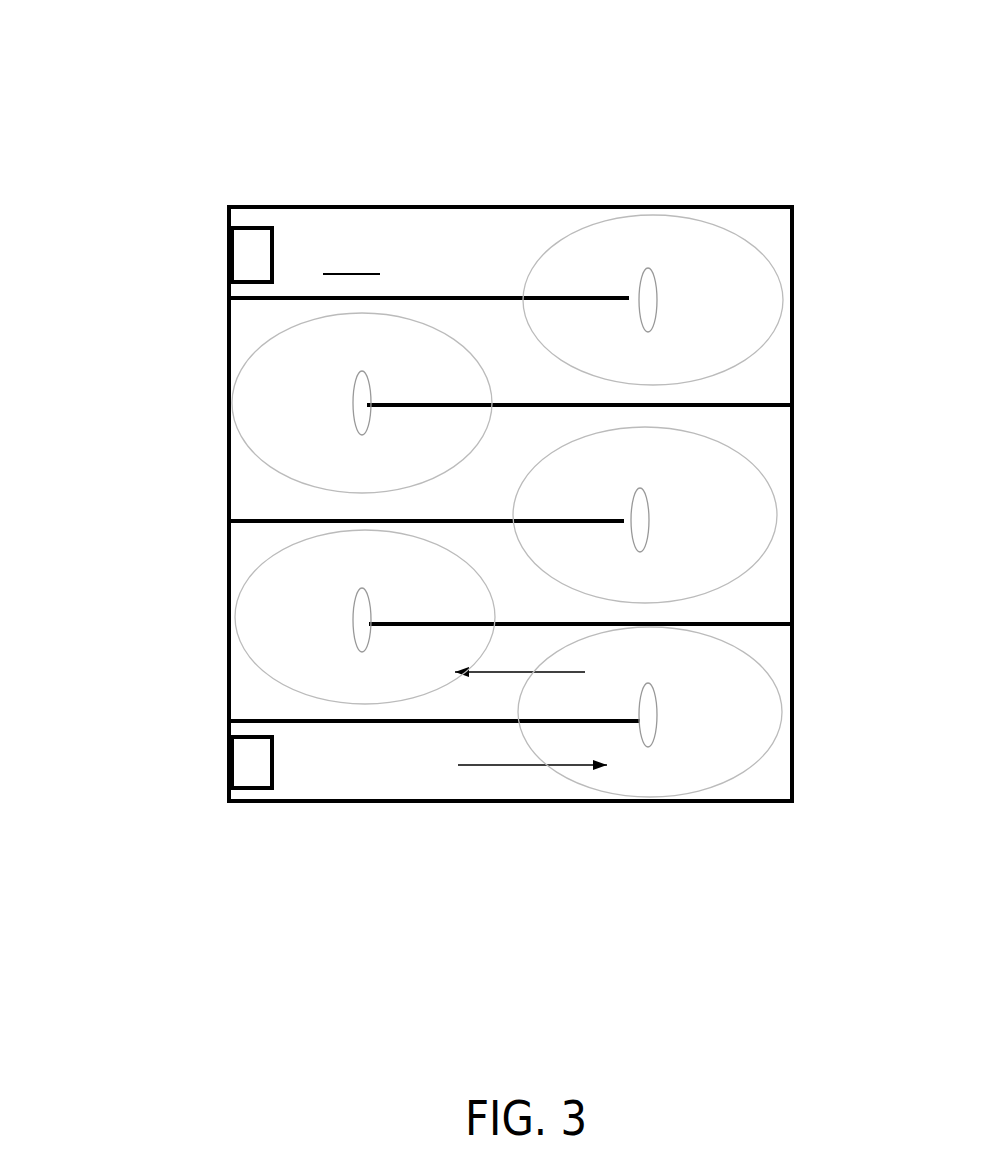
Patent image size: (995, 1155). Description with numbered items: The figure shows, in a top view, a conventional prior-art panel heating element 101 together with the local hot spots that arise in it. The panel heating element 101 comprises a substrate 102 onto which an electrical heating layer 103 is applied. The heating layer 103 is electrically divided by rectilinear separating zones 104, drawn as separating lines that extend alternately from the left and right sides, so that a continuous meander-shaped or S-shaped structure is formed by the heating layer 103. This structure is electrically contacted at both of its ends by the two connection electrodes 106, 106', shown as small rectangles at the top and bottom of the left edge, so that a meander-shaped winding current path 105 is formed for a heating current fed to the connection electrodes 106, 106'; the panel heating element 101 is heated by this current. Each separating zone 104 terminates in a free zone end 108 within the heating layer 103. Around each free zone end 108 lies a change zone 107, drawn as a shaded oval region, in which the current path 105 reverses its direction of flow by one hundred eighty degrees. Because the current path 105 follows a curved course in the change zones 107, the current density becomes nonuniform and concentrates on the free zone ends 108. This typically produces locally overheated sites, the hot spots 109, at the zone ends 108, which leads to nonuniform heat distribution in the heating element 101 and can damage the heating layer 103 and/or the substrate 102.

The panel heating element 101 is at (230, 128).
The substrate 102 is at (230, 248).
The electrical heating layer 103 is at (351, 259).
The separating zone 104 is at (434, 296).
The current path 105 is at (505, 674).
The connection electrode 106 is at (197, 259).
The connection electrode 106' is at (187, 762).
The change zone 107 is at (748, 293).
The free zone end 108 is at (630, 292).
The hot spot 109 is at (655, 288).